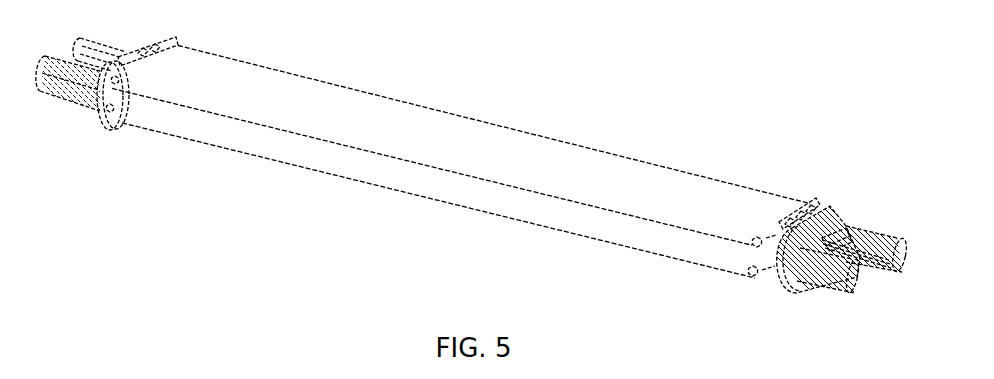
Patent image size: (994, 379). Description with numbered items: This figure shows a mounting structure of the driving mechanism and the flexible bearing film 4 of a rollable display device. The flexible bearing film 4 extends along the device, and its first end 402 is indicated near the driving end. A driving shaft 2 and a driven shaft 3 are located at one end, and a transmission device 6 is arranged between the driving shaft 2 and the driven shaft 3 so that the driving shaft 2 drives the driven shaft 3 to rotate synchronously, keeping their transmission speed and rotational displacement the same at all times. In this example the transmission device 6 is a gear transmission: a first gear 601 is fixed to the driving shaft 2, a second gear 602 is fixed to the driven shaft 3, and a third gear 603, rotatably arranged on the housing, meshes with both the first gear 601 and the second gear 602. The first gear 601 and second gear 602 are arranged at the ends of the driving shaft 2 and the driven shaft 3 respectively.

The driving shaft 2 is at (827, 262).
The driven shaft 3 is at (880, 240).
The flexible bearing film 4 is at (461, 162).
The first end of flexible bearing film 402 is at (648, 218).
The transmission device 6 is at (832, 205).
The first gear 601 is at (793, 227).
The second gear 602 is at (862, 200).
The third gear 603 is at (820, 240).